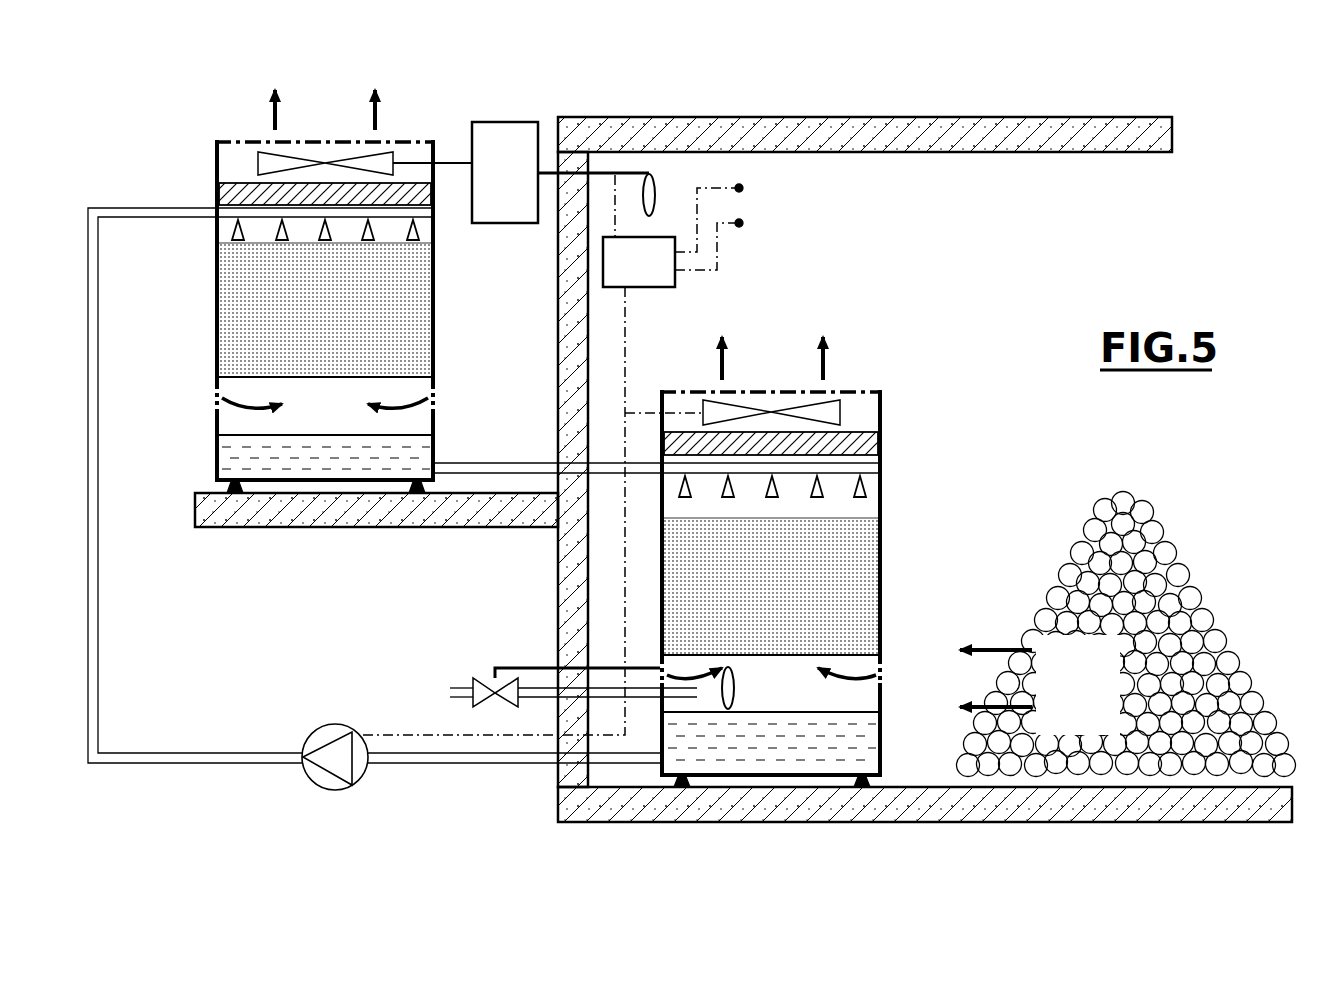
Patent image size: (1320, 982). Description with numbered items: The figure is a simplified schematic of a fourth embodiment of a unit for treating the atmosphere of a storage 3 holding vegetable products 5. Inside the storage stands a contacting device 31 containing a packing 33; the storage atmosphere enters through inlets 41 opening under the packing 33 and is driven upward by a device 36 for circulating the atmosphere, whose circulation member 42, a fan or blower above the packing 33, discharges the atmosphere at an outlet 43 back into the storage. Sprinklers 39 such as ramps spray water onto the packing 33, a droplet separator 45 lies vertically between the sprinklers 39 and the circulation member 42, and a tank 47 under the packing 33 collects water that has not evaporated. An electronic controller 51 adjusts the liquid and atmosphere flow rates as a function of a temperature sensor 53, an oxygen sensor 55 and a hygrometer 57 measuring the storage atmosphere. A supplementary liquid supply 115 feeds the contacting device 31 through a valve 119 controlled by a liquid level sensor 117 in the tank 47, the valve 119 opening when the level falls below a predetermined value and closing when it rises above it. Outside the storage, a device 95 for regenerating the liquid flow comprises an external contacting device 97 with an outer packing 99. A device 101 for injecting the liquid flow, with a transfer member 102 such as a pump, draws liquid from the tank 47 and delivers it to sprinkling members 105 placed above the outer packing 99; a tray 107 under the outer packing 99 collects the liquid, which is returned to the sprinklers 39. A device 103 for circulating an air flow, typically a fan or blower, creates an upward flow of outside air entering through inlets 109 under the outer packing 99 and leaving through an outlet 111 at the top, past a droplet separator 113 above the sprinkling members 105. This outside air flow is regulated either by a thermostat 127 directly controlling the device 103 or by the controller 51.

The storage 3 is at (1118, 150).
The vegetable products 5 is at (1200, 606).
The contacting device 31 is at (905, 600).
The packing 33 is at (865, 563).
The device for circulating the atmosphere 36 is at (852, 405).
The sprinklers 39 is at (868, 476).
The inlets 41 is at (882, 662).
The circulation member 42 is at (843, 415).
The outlet 43 is at (848, 392).
The droplet separator 45 is at (862, 440).
The tank 47 is at (884, 731).
The electronic controller 51 is at (548, 455).
The sensor 53 is at (655, 190).
The sensor 55 is at (745, 190).
The hygrometer 57 is at (745, 225).
The device for regenerating the liquid flow 95 is at (108, 118).
The external contacting device 97 is at (200, 190).
The outer packing 99 is at (245, 300).
The device for injecting the liquid flow 101 is at (290, 718).
The transfer member 102 is at (320, 790).
The device for circulating an air flow 103 is at (412, 122).
The sprinkling members 105 is at (255, 218).
The tray 107 is at (437, 446).
The inlets 109 is at (215, 413).
The outlet 111 is at (240, 140).
The droplet separator 113 is at (425, 200).
The supplementary liquid supply 115 is at (442, 682).
The liquid level sensor 117 is at (733, 688).
The valve 119 is at (495, 680).
The thermostat 127 is at (560, 172).